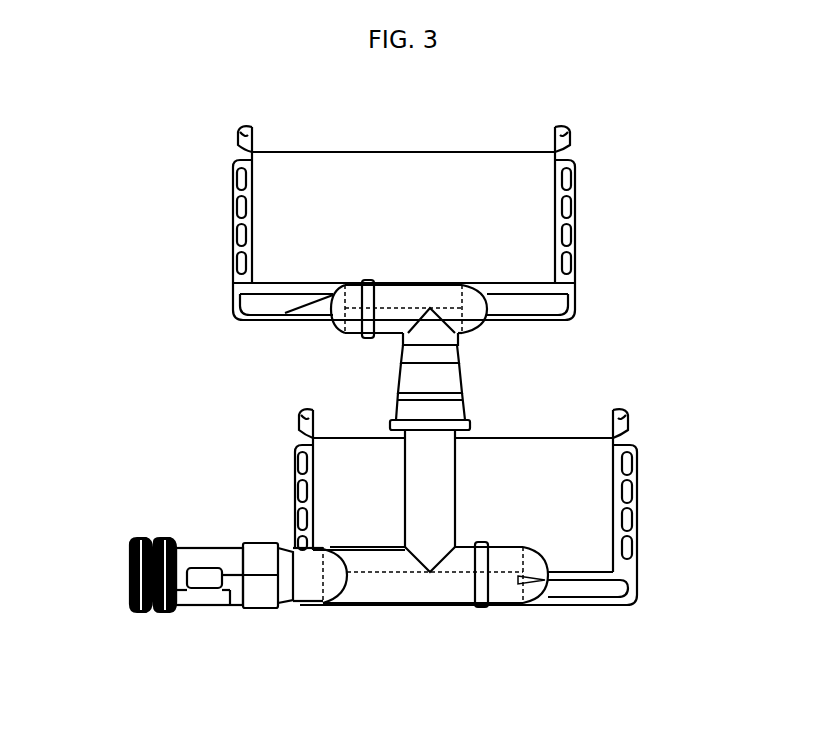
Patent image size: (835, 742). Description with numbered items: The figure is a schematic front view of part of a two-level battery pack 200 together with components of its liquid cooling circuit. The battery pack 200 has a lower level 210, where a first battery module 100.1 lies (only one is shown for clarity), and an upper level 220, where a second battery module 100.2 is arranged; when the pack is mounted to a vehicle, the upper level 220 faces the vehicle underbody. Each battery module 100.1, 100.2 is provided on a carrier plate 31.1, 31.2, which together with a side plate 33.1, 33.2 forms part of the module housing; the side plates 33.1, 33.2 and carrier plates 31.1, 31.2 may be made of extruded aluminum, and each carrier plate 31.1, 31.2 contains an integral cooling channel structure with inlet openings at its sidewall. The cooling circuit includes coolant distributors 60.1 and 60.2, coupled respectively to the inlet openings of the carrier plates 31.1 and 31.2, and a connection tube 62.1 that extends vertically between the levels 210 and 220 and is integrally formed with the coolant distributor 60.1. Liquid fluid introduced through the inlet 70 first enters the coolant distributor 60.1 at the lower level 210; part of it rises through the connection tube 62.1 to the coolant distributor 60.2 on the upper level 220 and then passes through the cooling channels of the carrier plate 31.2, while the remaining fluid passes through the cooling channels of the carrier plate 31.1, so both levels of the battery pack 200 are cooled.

The battery pack 200 is at (427, 93).
The upper level 220 is at (652, 212).
The lower level 210 is at (683, 497).
The second battery module 100.2 is at (440, 242).
The first battery module 100.1 is at (570, 504).
The side plate 33.2 is at (235, 183).
The carrier plate 31.2 is at (238, 300).
The coolant distributor 60.2 is at (386, 322).
The connection tube 62.1 is at (437, 475).
The side plate 33.1 is at (292, 462).
The carrier plate 31.1 is at (640, 578).
The coolant distributor 60.1 is at (375, 585).
The inlet 70 is at (128, 565).